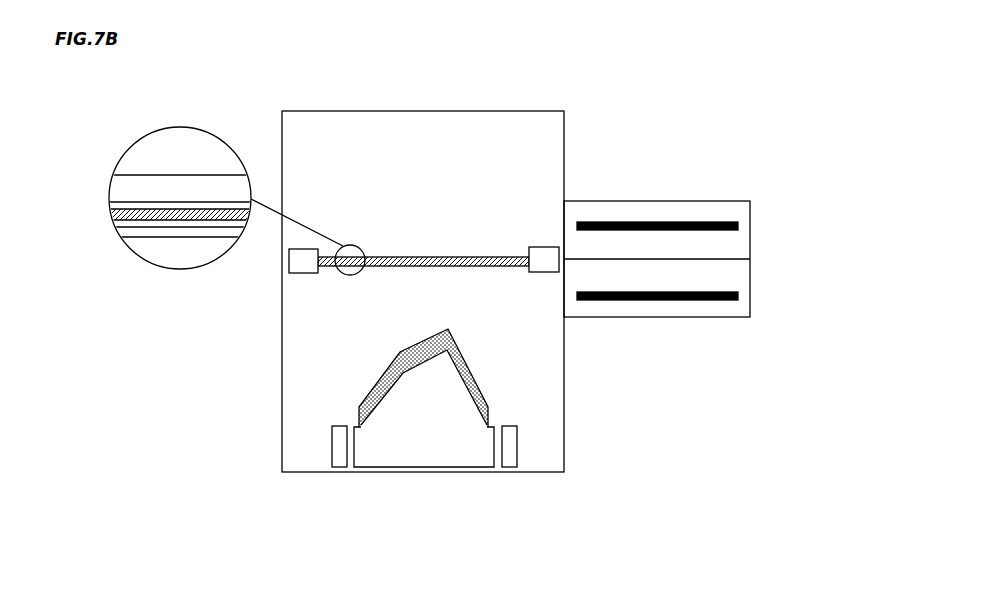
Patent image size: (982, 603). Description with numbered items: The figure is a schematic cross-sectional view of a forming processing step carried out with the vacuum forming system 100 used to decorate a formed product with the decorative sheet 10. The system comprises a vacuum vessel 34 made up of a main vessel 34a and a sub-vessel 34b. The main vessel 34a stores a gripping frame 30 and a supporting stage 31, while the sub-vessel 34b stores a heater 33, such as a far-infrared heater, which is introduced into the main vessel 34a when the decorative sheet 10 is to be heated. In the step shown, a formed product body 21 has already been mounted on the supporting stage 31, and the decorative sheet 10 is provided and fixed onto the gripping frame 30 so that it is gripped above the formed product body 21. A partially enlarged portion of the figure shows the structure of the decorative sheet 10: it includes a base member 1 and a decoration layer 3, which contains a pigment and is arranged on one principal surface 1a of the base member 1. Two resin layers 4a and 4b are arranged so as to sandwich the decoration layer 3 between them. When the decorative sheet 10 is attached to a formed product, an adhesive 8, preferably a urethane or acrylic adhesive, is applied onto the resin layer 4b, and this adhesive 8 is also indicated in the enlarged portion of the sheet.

The base member 1 is at (113, 188).
The principal surface 1a is at (172, 201).
The decoration layer 3 is at (112, 214).
The resin layer 4a is at (110, 207).
The resin layer 4b is at (110, 226).
The adhesive 8 is at (138, 233).
The decorative sheet 10 is at (437, 255).
The formed product body 21 is at (423, 365).
The gripping frame 30 is at (305, 268).
The supporting stage 31 is at (422, 460).
The heater 33 is at (713, 228).
The vacuum vessel 34 is at (600, 105).
The main vessel 34a is at (580, 165).
The sub-vessel 34b is at (659, 195).
The vacuum forming system 100 is at (749, 126).